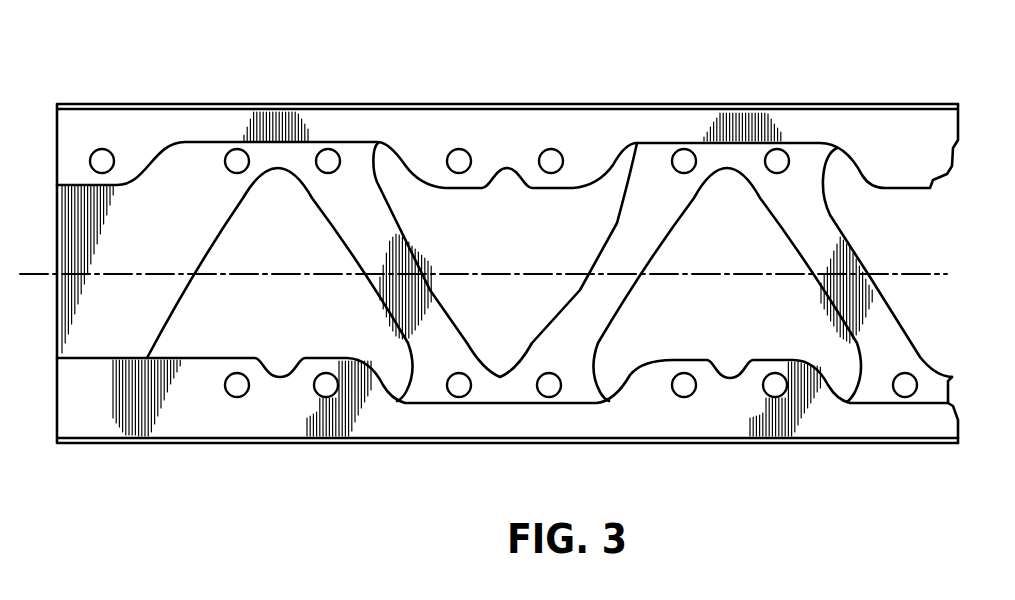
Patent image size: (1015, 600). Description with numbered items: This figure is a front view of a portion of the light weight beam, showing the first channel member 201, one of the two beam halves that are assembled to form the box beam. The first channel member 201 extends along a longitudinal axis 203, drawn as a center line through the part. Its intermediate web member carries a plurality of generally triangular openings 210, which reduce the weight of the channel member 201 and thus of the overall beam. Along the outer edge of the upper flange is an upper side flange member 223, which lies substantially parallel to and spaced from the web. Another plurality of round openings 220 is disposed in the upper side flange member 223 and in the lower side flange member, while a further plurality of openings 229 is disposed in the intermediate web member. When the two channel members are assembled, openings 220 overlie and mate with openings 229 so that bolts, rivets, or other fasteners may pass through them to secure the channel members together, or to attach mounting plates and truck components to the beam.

The first channel member 201 is at (172, 103).
The longitudinal axis 203 is at (917, 274).
The openings 210 is at (418, 264).
The openings 220 is at (458, 148).
The upper side flange member 223 is at (292, 142).
The openings 229 is at (236, 148).